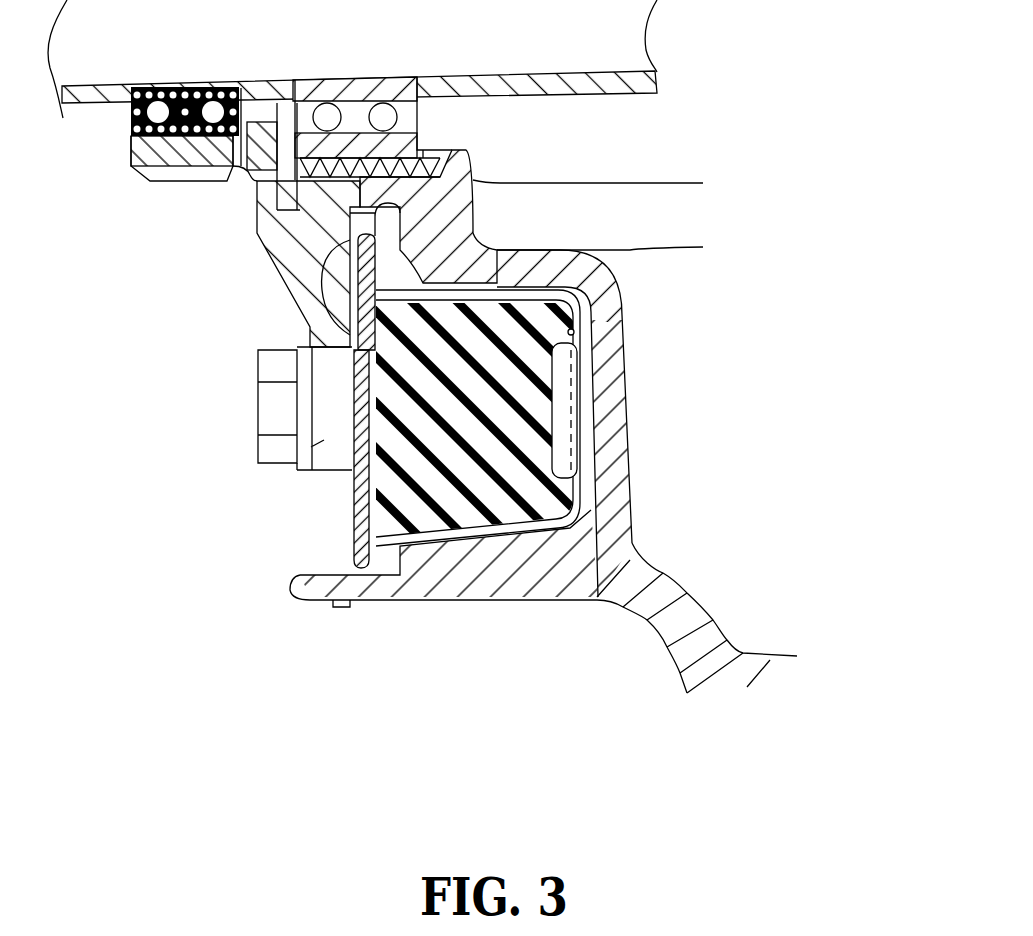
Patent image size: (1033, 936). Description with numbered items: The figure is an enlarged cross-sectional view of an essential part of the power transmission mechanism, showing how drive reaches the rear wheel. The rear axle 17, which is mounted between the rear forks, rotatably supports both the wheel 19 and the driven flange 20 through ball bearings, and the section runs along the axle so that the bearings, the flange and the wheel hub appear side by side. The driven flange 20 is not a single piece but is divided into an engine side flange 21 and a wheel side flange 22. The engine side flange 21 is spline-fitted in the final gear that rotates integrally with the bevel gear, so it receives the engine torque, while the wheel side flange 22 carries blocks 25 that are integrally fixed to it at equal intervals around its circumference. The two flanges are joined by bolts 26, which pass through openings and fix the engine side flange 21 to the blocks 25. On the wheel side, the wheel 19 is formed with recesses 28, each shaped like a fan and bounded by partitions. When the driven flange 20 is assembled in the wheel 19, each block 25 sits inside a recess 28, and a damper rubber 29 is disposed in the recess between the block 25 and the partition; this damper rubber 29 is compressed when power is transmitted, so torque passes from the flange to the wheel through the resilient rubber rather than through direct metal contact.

The rear axle 17 is at (637, 40).
The wheel 19 is at (545, 588).
The driven flange 20 is at (275, 330).
The engine side flange 21 is at (280, 468).
The wheel side flange 22 is at (350, 517).
The block 25 is at (400, 546).
The bolt 26 is at (267, 367).
The recess 28 is at (626, 383).
The damper rubber 29 is at (480, 487).